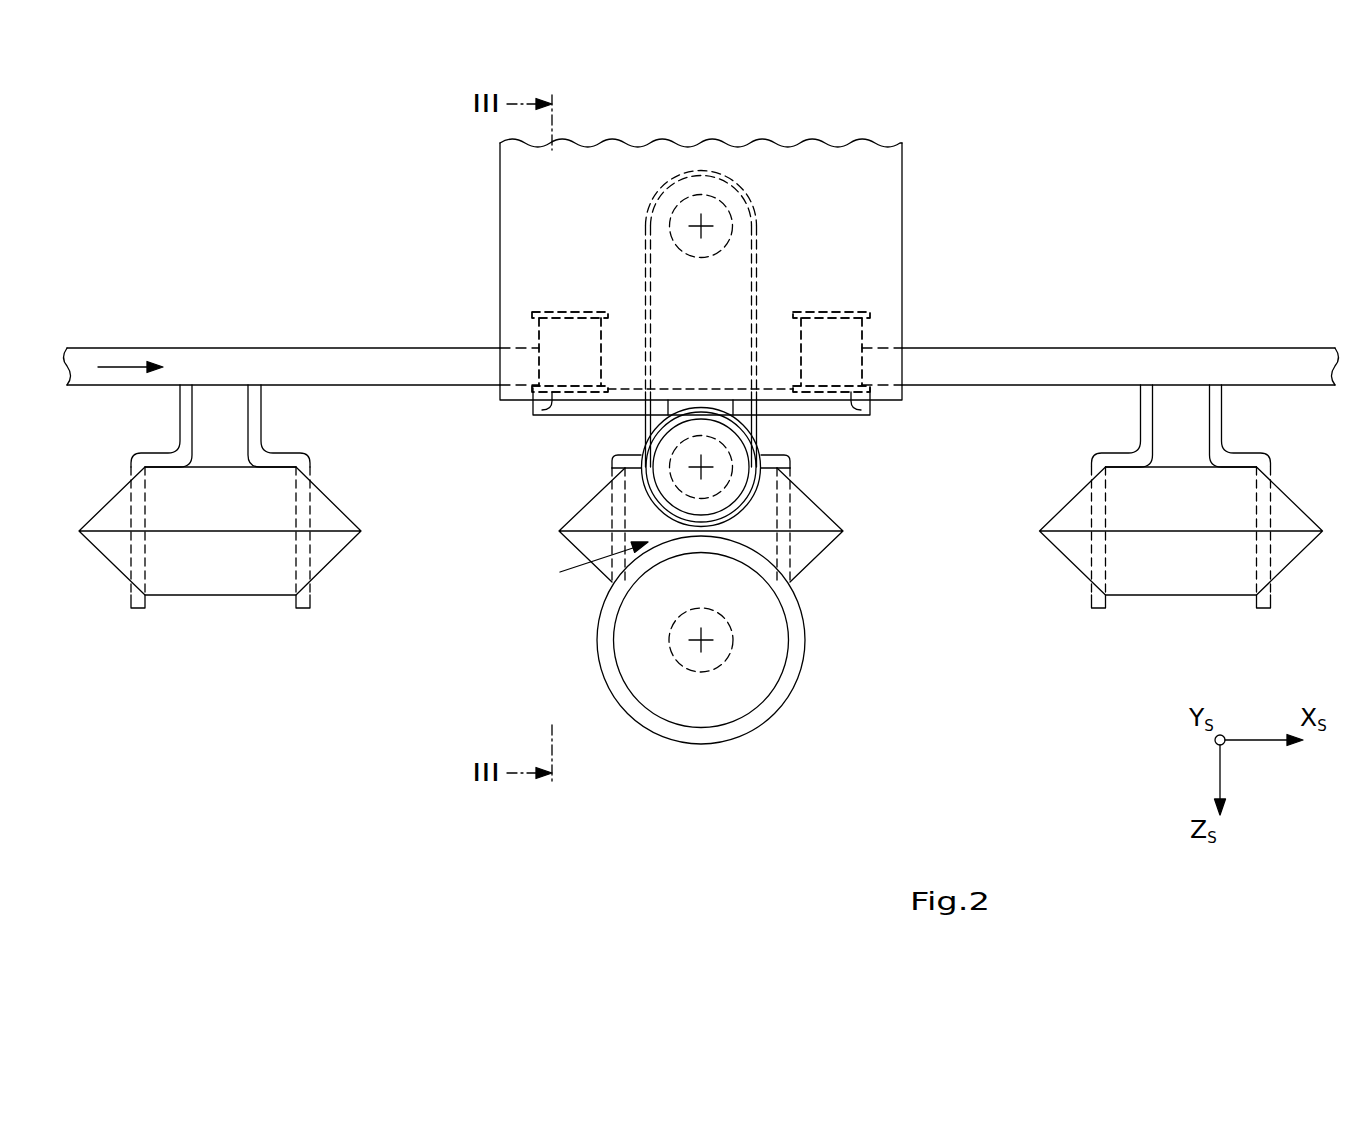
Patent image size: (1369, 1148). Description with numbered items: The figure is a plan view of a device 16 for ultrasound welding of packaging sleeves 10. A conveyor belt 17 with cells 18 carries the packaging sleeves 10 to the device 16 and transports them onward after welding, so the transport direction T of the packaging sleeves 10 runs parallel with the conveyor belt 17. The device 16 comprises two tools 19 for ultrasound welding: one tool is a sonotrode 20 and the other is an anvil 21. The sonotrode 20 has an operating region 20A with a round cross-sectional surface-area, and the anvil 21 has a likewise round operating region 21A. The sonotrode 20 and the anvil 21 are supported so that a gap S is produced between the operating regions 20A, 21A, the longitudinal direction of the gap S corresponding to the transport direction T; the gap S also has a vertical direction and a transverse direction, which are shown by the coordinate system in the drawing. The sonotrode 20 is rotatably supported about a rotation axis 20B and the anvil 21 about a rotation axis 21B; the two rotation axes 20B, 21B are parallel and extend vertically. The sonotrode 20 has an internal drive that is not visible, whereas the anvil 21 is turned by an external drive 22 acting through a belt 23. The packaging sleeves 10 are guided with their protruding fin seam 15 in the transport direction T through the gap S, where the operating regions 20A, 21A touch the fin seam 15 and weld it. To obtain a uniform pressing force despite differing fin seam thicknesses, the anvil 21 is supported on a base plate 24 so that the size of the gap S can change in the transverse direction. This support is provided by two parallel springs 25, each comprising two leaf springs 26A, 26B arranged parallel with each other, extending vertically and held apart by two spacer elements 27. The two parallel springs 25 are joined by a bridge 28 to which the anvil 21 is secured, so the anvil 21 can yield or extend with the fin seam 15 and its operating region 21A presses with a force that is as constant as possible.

The packaging sleeve 10 is at (213, 545).
The fin seam 15 is at (219, 534).
The device 16 is at (655, 263).
The conveyor belt 17 is at (221, 360).
The cell 18 is at (135, 455).
The tool 19 is at (762, 584).
The sonotrode 20 is at (747, 648).
The operating region of the sonotrode 20A is at (788, 668).
The rotation axis of the sonotrode 20B is at (783, 684).
The anvil 21 is at (770, 494).
The operating region of the anvil 21A is at (755, 477).
The rotation axis of the anvil 21B is at (704, 464).
The external drive 22 is at (713, 187).
The belt 23 is at (760, 267).
The base plate 24 is at (880, 187).
The parallel spring 25 is at (500, 305).
The leaf spring 26A is at (550, 312).
The leaf spring 26B is at (540, 407).
The spacer element 27 is at (557, 341).
The bridge 28 is at (568, 407).
The transport direction T is at (123, 364).
The gap S is at (593, 566).